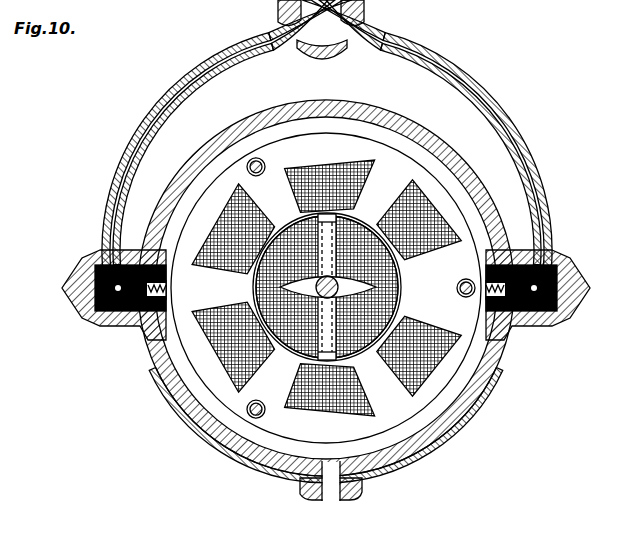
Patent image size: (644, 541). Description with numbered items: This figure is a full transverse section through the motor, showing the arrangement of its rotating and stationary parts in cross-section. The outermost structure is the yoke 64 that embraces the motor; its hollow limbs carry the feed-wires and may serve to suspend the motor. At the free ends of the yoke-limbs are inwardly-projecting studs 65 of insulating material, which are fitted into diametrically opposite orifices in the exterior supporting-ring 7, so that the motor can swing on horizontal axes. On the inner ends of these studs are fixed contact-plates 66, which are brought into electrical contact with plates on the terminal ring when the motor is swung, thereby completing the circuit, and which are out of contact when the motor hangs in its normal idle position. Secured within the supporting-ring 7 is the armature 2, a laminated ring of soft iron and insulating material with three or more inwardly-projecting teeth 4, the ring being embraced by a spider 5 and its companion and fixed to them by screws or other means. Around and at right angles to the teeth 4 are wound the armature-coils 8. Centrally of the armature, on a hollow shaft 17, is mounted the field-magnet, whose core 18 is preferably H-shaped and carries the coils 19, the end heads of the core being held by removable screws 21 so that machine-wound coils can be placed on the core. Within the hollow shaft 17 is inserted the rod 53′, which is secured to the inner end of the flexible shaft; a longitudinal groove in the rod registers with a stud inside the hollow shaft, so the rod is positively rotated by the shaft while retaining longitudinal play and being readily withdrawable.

The armature 2 is at (455, 353).
The inwardly-projecting teeth 4 is at (361, 288).
The spider 5 is at (306, 358).
The exterior supporting-ring 7 is at (399, 125).
The armature-coils 8 is at (432, 236).
The hollow shaft 17 is at (339, 289).
The core 18 is at (328, 323).
The coils 19 is at (399, 307).
The screws 21 is at (326, 250).
The rod 53′ is at (425, 288).
The yoke 64 is at (505, 100).
The inwardly-projecting studs 65 is at (112, 326).
The contact-plates 66 is at (166, 286).